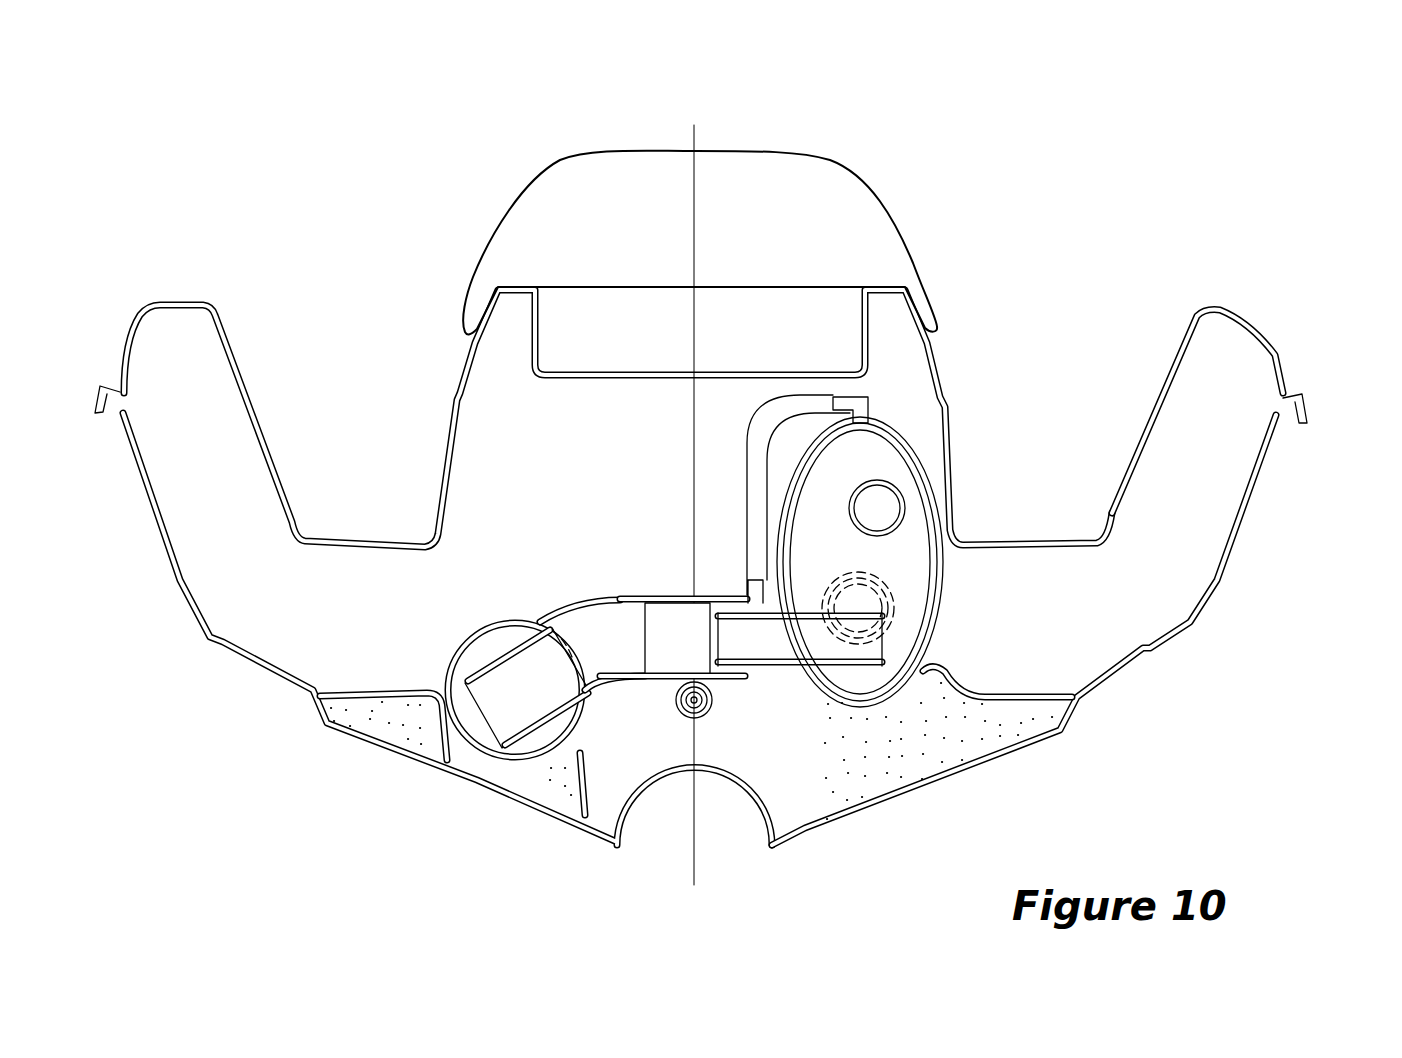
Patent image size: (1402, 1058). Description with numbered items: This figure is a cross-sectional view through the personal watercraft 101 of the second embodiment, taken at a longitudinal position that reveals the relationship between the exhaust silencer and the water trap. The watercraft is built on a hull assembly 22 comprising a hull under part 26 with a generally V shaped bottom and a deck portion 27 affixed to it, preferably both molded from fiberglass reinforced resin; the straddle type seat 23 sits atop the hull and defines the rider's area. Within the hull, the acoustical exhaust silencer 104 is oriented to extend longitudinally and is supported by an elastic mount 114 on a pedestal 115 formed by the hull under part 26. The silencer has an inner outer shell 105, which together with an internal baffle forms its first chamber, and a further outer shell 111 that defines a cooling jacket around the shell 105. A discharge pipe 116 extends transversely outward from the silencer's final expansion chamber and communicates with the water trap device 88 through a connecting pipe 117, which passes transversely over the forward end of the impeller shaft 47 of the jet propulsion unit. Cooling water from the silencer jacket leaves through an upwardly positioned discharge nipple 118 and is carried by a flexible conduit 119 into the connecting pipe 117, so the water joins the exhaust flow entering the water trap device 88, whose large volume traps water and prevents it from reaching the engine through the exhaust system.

The personal watercraft 101 is at (931, 141).
The straddle type seat 23 is at (908, 240).
The deck portion 27 is at (1256, 312).
The hull assembly 22 is at (1273, 494).
The hull under part 26 is at (1204, 625).
The discharge nipple 118 is at (868, 399).
The acoustical exhaust silencer 104 is at (918, 453).
The outer shell 105 is at (935, 510).
The outer shell 111 is at (938, 603).
The elastic mount 114 is at (930, 668).
The pedestal 115 is at (1050, 692).
The flexible conduit 119 is at (756, 504).
The connecting pipe 117 is at (664, 594).
The water trap device 88 is at (514, 612).
The discharge pipe 116 is at (768, 680).
The impeller shaft 47 is at (679, 717).